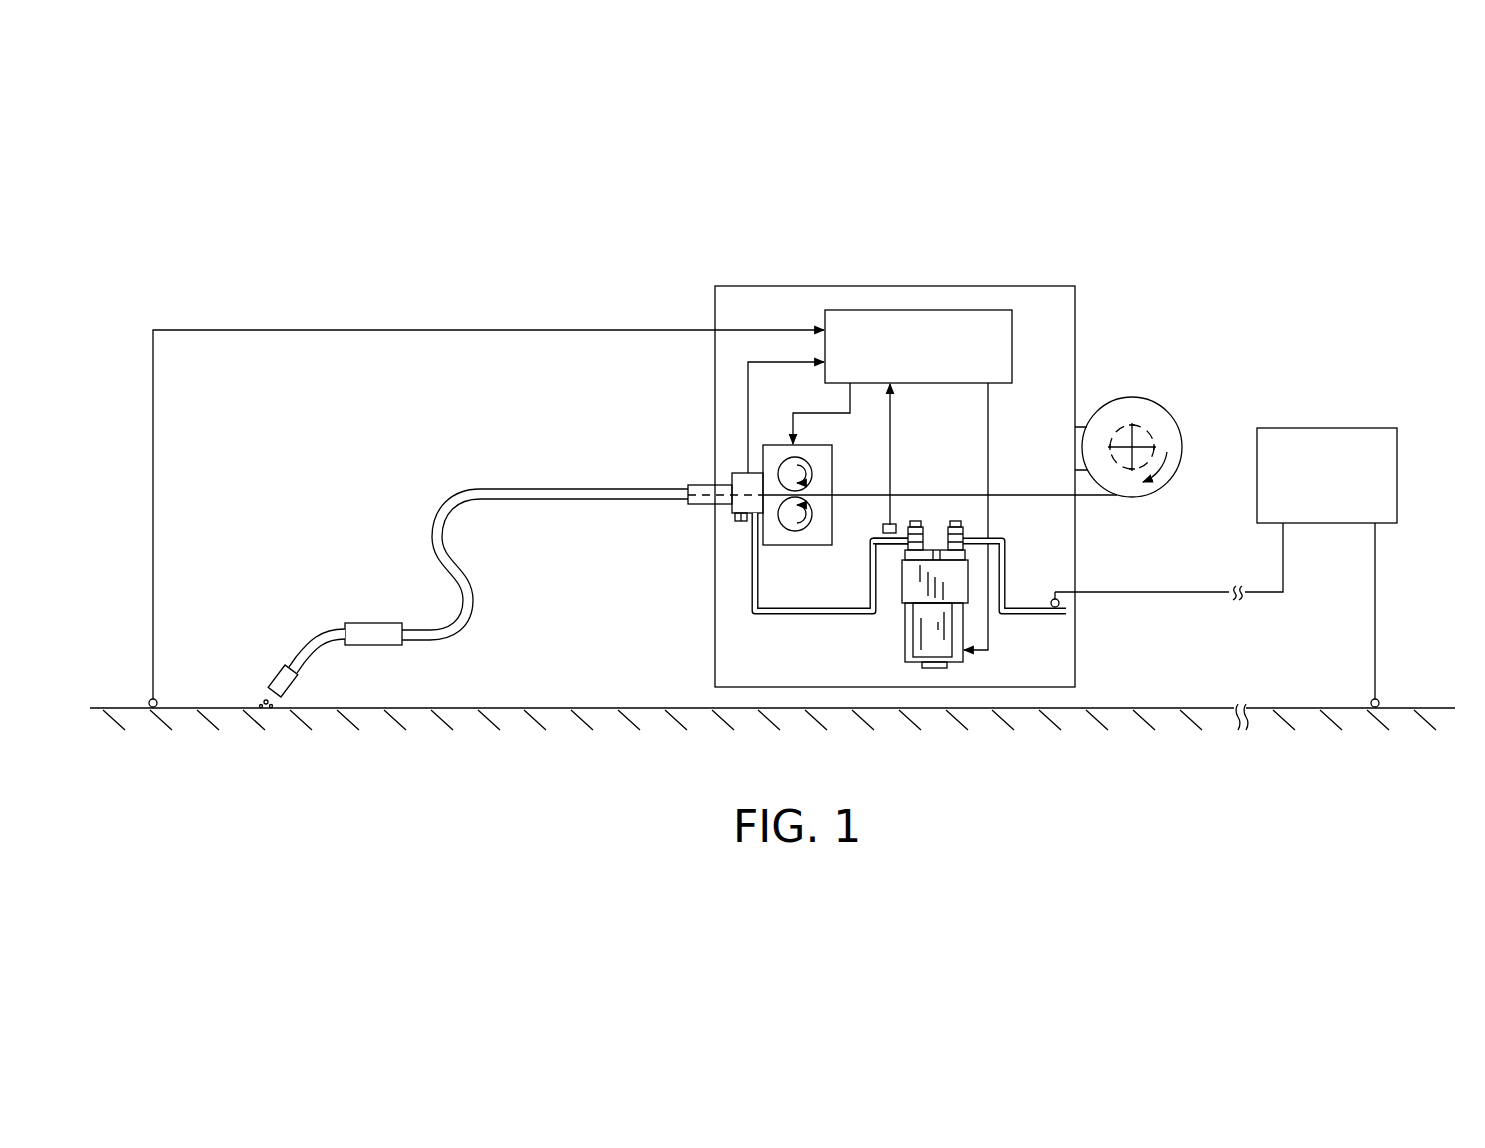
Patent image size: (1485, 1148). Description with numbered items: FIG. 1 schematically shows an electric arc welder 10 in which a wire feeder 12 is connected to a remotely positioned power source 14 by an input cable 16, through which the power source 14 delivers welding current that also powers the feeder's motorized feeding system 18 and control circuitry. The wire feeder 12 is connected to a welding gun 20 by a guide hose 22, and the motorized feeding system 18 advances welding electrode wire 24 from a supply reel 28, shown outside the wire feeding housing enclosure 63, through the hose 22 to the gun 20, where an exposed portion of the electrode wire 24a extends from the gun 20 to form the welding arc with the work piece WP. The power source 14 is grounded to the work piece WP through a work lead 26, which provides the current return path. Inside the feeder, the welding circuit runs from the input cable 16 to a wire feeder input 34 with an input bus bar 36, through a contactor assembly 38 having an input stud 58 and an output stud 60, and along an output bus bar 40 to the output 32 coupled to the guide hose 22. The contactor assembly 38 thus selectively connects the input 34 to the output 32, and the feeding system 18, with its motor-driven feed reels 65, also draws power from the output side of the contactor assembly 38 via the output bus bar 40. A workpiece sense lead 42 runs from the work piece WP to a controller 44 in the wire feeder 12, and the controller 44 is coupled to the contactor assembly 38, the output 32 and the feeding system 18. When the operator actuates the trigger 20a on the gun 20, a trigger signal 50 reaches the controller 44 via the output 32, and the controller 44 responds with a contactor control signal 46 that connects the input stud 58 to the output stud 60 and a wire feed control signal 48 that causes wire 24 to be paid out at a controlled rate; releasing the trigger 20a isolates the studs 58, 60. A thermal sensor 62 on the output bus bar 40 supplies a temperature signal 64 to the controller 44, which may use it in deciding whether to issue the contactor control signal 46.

The electric arc welder 10 is at (1190, 246).
The wire feeder 12 is at (1004, 282).
The power source 14 is at (1337, 428).
The input cable 16 is at (1177, 592).
The motorized feeding system 18 is at (742, 553).
The welding gun 20 is at (318, 628).
The trigger 20a is at (363, 645).
The guide hose 22 is at (555, 489).
The welding electrode wire 24 is at (1050, 495).
The exposed portion of the electrode wire 24a is at (265, 697).
The work lead 26 is at (1375, 643).
The supply reel 28 is at (1147, 403).
The output 32 is at (703, 507).
The wire feeder input 34 is at (1033, 616).
The input bus bar 36 is at (1010, 578).
The contactor assembly 38 is at (902, 577).
The output bus bar 40 is at (840, 614).
The workpiece sense lead 42 is at (492, 328).
The controller 44 is at (935, 310).
The contactor control signal 46 is at (988, 433).
The wire feed control signal 48 is at (820, 412).
The trigger signal 50 is at (748, 388).
The input stud 58 is at (955, 520).
The output stud 60 is at (915, 520).
The thermal sensor 62 is at (882, 532).
The wire feeding housing enclosure 63 is at (714, 630).
The temperature signal 64 is at (890, 477).
The feed reels 65 is at (785, 468).
The work piece WP is at (1137, 707).